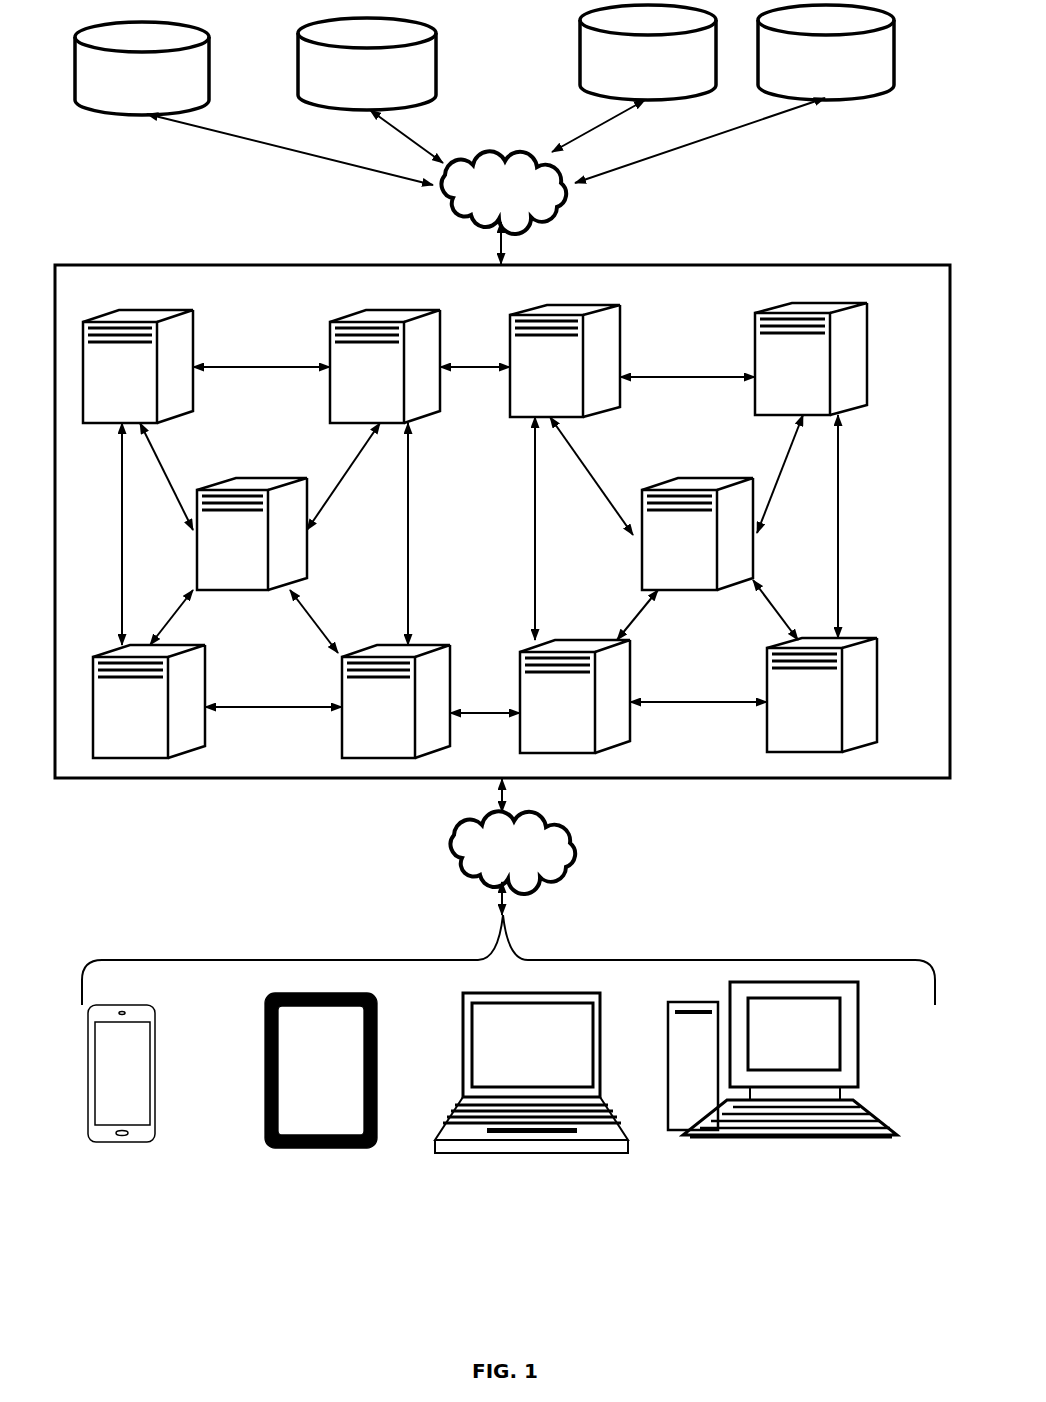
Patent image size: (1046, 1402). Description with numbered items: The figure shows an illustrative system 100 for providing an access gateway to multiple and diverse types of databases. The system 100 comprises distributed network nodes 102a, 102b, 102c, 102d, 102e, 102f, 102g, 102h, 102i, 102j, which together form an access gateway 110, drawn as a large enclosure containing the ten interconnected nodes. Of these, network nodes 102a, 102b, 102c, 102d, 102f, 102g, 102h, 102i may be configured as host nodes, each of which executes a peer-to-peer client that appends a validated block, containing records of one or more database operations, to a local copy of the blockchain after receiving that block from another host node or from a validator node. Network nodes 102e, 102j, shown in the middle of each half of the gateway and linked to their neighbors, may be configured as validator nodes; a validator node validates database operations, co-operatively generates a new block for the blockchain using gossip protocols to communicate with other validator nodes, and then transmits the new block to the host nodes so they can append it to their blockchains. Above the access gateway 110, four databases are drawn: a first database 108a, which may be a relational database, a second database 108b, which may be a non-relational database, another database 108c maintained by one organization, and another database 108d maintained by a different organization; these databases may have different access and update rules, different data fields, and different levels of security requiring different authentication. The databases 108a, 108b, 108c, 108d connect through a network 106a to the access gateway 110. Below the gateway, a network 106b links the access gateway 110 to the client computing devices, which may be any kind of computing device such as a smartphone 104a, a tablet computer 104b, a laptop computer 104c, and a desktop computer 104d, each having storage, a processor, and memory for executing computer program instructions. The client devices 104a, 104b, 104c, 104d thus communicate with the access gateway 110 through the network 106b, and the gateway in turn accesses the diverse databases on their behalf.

The system 100 is at (502, 661).
The network node 102a is at (138, 366).
The network node 102b is at (385, 366).
The network node 102c is at (396, 701).
The network node 102d is at (149, 701).
The network node 102e is at (252, 534).
The network node 102f is at (565, 361).
The network node 102g is at (811, 359).
The network node 102h is at (822, 695).
The network node 102i is at (575, 696).
The network node 102j is at (697, 534).
The smartphone 104a is at (121, 1091).
The tablet computer 104b is at (321, 1090).
The laptop computer 104c is at (531, 1090).
The desktop computer 104d is at (782, 1084).
The network 106a is at (504, 192).
The network 106b is at (513, 852).
The first database 108a is at (142, 68).
The second database 108b is at (367, 64).
The database 108c is at (648, 52).
The database 108d is at (826, 52).
The access gateway 110 is at (502, 521).